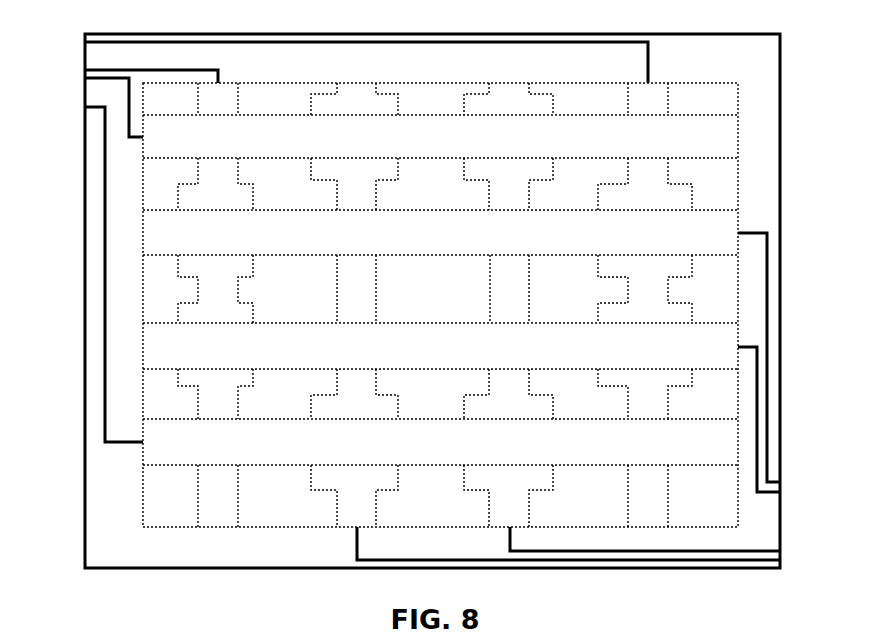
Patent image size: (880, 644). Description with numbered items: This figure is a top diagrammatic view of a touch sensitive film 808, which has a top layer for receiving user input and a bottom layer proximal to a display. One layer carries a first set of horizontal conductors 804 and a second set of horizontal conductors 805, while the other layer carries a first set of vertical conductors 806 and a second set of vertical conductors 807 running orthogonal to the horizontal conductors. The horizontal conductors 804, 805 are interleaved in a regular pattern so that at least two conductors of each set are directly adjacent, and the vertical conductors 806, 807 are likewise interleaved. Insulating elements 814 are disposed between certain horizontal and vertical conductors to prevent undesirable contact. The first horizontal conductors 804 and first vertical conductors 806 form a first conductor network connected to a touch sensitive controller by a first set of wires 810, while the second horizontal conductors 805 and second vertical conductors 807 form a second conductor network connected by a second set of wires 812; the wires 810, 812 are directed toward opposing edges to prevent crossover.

The first set of horizontal conductors 804 is at (678, 228).
The second set of horizontal conductors 805 is at (318, 150).
The first set of vertical conductors 806 is at (347, 518).
The second set of vertical conductors 807 is at (217, 516).
The touch sensitive film 808 is at (720, 95).
The first set of wires 810 is at (793, 562).
The second set of wires 812 is at (78, 113).
The insulating elements 814 is at (237, 315).